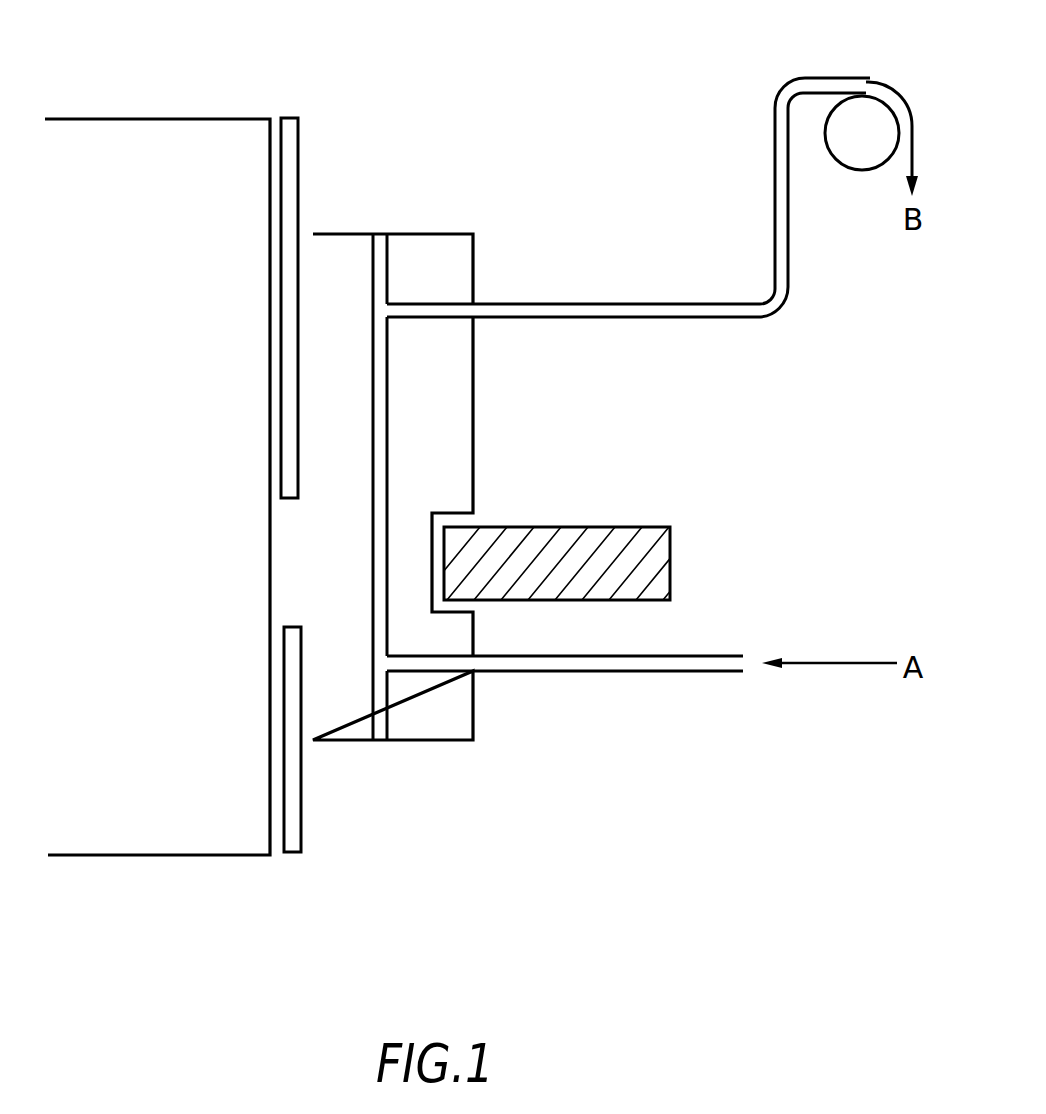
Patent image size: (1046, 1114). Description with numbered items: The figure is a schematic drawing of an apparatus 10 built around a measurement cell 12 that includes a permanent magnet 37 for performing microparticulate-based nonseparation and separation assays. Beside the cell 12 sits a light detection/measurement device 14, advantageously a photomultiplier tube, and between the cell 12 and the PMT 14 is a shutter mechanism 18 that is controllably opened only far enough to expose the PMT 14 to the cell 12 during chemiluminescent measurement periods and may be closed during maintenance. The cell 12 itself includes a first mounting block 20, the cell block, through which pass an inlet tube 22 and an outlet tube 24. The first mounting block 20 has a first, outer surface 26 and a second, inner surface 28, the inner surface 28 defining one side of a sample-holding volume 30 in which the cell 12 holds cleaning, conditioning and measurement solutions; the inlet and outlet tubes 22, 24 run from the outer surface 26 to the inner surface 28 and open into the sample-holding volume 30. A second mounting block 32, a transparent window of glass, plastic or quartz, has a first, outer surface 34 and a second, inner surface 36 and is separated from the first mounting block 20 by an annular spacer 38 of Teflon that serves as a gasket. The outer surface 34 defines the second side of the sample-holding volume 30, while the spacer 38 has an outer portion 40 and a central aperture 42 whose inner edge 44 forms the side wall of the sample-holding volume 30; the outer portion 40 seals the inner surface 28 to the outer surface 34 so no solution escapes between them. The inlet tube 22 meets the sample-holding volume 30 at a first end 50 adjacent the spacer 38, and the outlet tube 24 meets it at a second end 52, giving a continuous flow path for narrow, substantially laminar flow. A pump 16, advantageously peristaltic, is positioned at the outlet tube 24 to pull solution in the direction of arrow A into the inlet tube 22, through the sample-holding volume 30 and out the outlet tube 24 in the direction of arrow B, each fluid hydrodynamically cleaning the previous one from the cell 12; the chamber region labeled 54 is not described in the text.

The apparatus 10 is at (320, 36).
The measurement cell 12 is at (528, 770).
The light detection/measurement device 14 is at (197, 856).
The pump 16 is at (850, 168).
The shutter mechanism 18 is at (290, 117).
The first mounting block 20 is at (437, 742).
The inlet tube 22 is at (628, 672).
The outlet tube 24 is at (678, 303).
The first, outer surface 26 is at (473, 643).
The second, inner surface 28 is at (388, 628).
The sample-holding volume 30 is at (373, 490).
The second mounting block 32 is at (355, 742).
The first, outer surface 34 is at (373, 585).
The second, inner surface 36 is at (318, 727).
The permanent magnet 37 is at (677, 556).
The annular spacer 38 is at (382, 234).
The outer portion 40 is at (387, 257).
The central aperture 42 is at (371, 258).
The inner edge 44 is at (380, 306).
The first end 50 is at (373, 667).
The second end 52 is at (373, 308).
The chamber 54 is at (592, 453).